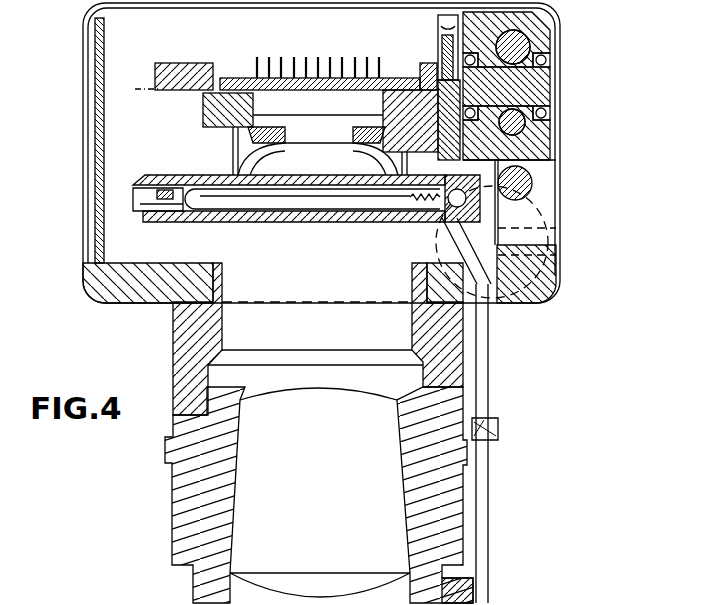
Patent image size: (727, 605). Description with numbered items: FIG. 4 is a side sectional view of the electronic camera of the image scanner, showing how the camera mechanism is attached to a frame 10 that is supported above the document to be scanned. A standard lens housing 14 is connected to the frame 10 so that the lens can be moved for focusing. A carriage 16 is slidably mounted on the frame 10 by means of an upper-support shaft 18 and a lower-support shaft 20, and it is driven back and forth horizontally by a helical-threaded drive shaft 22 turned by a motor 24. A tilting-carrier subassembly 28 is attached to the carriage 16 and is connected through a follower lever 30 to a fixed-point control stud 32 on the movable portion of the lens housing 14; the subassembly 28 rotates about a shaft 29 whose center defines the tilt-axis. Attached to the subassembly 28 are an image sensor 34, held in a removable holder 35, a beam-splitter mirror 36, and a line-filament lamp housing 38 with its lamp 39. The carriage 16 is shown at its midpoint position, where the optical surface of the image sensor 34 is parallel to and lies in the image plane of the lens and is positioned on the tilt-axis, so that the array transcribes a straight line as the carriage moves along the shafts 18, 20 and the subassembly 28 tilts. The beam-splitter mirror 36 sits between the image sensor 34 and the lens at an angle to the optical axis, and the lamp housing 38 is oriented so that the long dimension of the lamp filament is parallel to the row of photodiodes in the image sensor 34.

The frame 10 is at (84, 181).
The lens housing 14 is at (178, 517).
The carriage 16 is at (540, 26).
The upper-support shaft 18 is at (549, 49).
The lower-support shaft 20 is at (531, 186).
The helical-threaded drive shaft 22 is at (545, 133).
The motor 24 is at (437, 240).
The tilting-carrier subassembly 28 is at (214, 108).
The shaft 29 is at (552, 88).
The follower lever 30 is at (489, 362).
The fixed-point control stud 32 is at (497, 432).
The image sensor 34 is at (233, 78).
The removable holder 35 is at (186, 70).
The beam-splitter mirror 36 is at (310, 142).
The line-filament lamp housing 38 is at (162, 217).
The lamp 39 is at (281, 212).